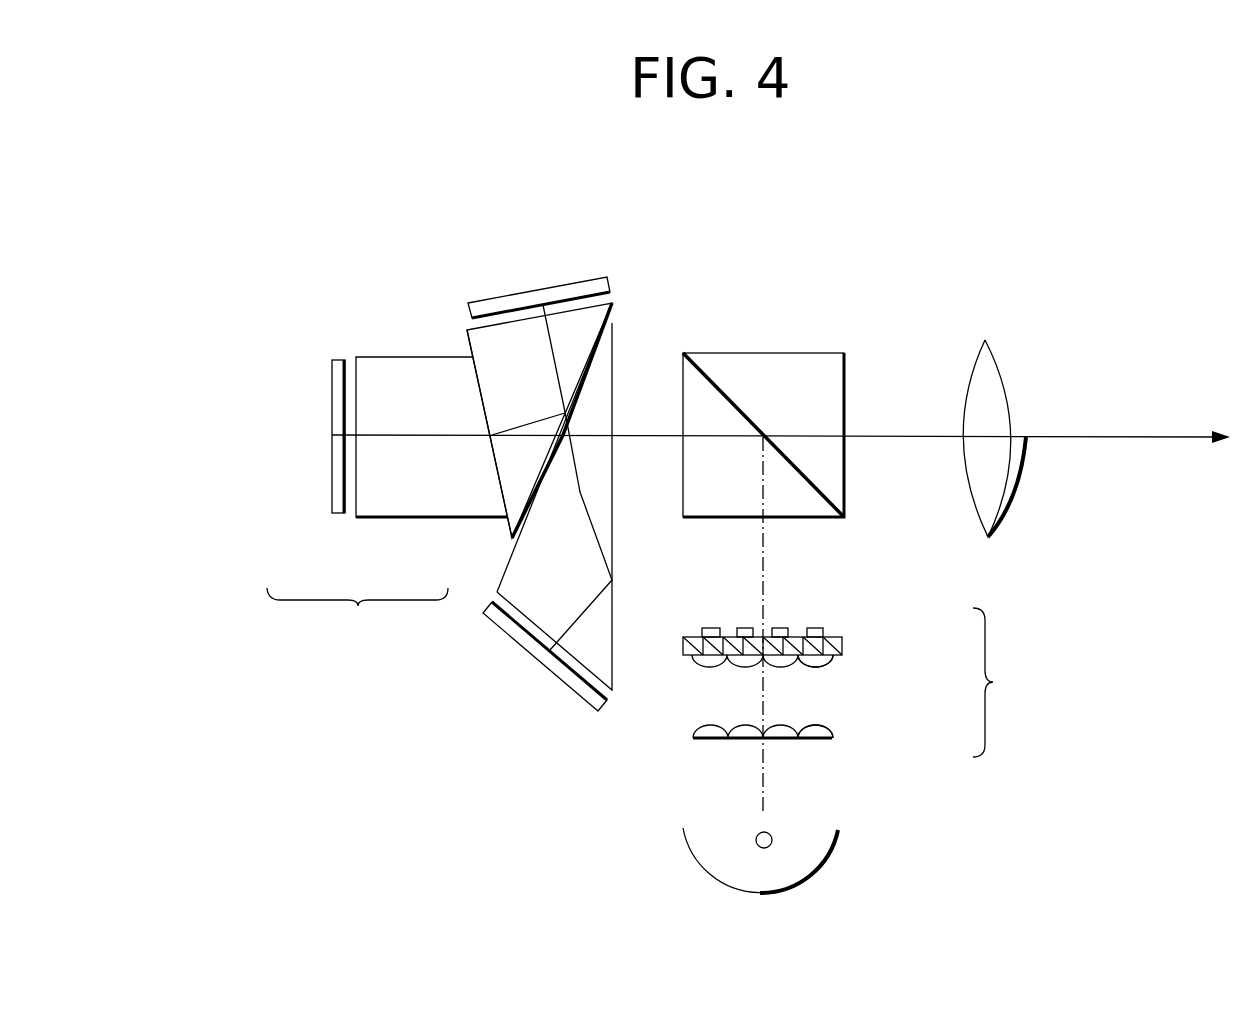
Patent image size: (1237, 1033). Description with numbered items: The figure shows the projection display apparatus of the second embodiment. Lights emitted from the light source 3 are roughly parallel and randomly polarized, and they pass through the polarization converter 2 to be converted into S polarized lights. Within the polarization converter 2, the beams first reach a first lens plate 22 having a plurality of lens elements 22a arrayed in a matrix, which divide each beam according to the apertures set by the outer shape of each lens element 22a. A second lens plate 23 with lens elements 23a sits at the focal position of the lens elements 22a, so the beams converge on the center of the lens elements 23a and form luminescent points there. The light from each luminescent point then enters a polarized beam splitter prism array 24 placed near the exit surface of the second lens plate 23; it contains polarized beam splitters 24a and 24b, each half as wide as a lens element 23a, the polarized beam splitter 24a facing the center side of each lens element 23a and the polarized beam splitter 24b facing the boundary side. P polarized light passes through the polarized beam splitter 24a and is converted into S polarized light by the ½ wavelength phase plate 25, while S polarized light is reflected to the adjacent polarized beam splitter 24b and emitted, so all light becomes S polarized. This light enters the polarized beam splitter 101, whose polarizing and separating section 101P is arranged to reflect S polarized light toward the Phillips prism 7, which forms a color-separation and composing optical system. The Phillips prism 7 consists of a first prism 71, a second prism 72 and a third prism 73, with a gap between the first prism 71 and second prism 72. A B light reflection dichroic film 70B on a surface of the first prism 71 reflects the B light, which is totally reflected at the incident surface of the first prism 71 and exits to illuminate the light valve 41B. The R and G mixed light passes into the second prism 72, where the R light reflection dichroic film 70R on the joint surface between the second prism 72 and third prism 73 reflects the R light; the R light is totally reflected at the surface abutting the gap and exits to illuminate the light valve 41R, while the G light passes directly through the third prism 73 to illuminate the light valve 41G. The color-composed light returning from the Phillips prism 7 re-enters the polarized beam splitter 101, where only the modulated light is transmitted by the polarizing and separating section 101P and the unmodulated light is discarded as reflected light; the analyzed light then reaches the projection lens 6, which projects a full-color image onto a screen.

The polarization converter 2 is at (997, 682).
The light source 3 is at (833, 857).
The projection lens 6 is at (1015, 385).
The Phillips prism 7 is at (357, 615).
The first lens plate 22 is at (858, 733).
The lens element 22a is at (813, 732).
The second lens plate 23 is at (855, 669).
The lens element 23a is at (822, 670).
The polarized beam splitter prism array 24 is at (862, 636).
The polarized beam splitter 24a is at (745, 632).
The polarized beam splitter 24b is at (758, 630).
The ½ wavelength phase plate 25 is at (779, 628).
The light valve for G light 41G is at (332, 492).
The light valve for R light 41R is at (578, 280).
The light valve for B light 41B is at (515, 633).
The R light reflection dichroic film 70R is at (476, 377).
The B light reflection dichroic film 70B is at (602, 353).
The first prism 71 is at (517, 576).
The second prism 72 is at (502, 478).
The third prism 73 is at (373, 508).
The polarized beam splitter 101 is at (798, 353).
The polarizing and separating section 101P is at (823, 500).